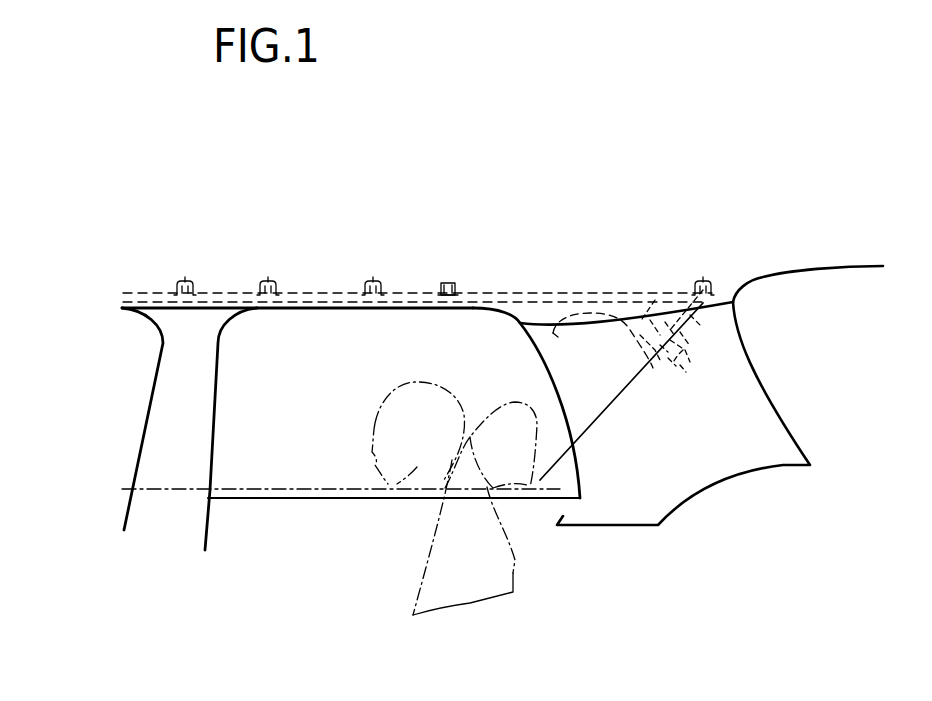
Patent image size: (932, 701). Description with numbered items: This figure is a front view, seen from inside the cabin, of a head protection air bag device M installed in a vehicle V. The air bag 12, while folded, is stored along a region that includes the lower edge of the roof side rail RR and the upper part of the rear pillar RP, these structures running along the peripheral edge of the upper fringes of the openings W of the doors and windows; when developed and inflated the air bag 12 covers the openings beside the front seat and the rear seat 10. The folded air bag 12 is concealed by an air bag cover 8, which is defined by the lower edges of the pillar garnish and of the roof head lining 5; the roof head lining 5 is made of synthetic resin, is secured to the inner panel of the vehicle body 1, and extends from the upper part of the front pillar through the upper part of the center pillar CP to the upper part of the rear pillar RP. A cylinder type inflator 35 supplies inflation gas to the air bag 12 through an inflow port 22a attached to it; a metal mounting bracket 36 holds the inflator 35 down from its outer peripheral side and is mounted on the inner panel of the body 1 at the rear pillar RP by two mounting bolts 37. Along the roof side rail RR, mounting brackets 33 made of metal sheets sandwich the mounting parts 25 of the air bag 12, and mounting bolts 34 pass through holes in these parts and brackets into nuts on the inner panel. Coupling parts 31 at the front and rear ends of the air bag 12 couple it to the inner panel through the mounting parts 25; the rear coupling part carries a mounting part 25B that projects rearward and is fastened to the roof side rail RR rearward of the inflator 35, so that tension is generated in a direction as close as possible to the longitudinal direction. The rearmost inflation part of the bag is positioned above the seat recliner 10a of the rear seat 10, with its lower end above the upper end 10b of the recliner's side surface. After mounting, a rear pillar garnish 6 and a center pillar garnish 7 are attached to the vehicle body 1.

The vehicle body 1 is at (403, 287).
The roof head lining 5 is at (227, 282).
The center pillar garnish 7 is at (163, 480).
The center pillar CP is at (217, 462).
The air bag cover 8 is at (397, 310).
The openings W is at (328, 472).
The roof side rail RR is at (497, 270).
The vehicle V is at (852, 245).
The rear pillar garnish 6 is at (785, 455).
The rear pillar RP is at (797, 388).
The head protection air bag device M is at (615, 225).
The mounting bolts 37 is at (655, 297).
The inflow port 22a is at (683, 350).
The mounting bracket 36 is at (652, 367).
The inflator 35 is at (677, 370).
The mounting part 25B is at (718, 282).
The mounting parts 25 is at (430, 288).
The mounting bolts 34 is at (443, 283).
The mounting brackets 33 is at (463, 287).
The coupling parts 31 is at (585, 418).
The air bag 12 is at (562, 480).
The rear seat 10 is at (412, 567).
The seat recliner 10a is at (473, 595).
The upper end 10b is at (527, 487).